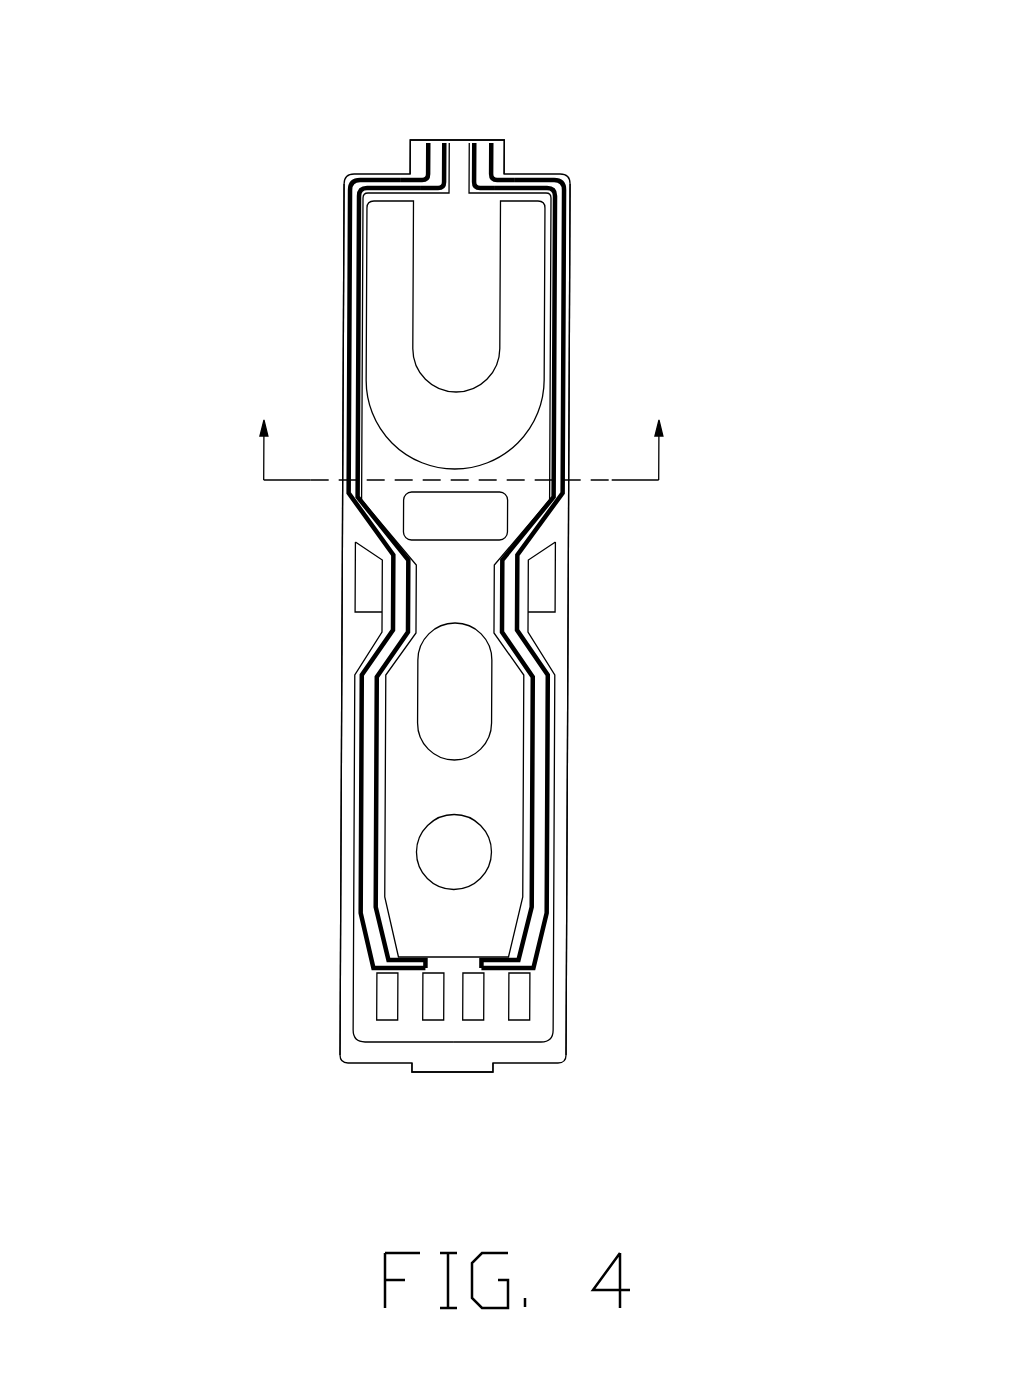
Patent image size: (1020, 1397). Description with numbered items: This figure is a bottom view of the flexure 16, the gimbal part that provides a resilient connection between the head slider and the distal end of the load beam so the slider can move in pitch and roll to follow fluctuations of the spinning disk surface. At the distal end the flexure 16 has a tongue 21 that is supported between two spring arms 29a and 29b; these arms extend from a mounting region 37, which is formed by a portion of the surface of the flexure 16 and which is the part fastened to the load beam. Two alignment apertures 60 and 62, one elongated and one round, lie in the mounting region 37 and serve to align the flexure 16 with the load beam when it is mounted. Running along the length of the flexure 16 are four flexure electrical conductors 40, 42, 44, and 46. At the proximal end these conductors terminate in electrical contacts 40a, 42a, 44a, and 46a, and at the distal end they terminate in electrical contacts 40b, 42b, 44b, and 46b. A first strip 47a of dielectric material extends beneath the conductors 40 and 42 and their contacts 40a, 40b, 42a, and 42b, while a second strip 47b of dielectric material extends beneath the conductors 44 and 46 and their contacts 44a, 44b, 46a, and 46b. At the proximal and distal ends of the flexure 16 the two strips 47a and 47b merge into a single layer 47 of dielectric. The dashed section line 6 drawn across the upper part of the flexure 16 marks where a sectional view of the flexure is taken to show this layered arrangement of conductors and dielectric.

The flexure 16 is at (471, 615).
The tongue 21 is at (500, 272).
The spring arm 29a is at (571, 375).
The spring arm 29b is at (343, 285).
The mounting region 37 is at (568, 855).
The flexure electrical conductor 40 is at (360, 832).
The electrical contact 40a is at (378, 997).
The electrical contact 40b is at (428, 140).
The flexure electrical conductor 42 is at (380, 777).
The electrical contact 42a is at (430, 1022).
The electrical contact 42b is at (443, 140).
The flexure electrical conductor 44 is at (532, 780).
The electrical contact 44a is at (473, 1020).
The electrical contact 44b is at (479, 135).
The flexure electrical conductor 46 is at (547, 823).
The electrical contact 46a is at (515, 1020).
The electrical contact 46b is at (497, 138).
The dielectric layer 47 is at (506, 160).
The first dielectric strip 47a is at (355, 730).
The second dielectric strip 47b is at (556, 905).
The alignment aperture 60 is at (480, 683).
The alignment aperture 62 is at (487, 842).
The section line 6 is at (462, 434).